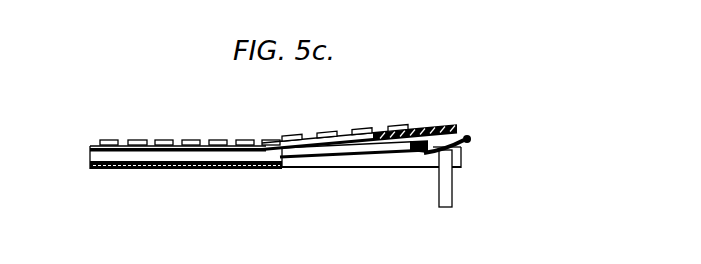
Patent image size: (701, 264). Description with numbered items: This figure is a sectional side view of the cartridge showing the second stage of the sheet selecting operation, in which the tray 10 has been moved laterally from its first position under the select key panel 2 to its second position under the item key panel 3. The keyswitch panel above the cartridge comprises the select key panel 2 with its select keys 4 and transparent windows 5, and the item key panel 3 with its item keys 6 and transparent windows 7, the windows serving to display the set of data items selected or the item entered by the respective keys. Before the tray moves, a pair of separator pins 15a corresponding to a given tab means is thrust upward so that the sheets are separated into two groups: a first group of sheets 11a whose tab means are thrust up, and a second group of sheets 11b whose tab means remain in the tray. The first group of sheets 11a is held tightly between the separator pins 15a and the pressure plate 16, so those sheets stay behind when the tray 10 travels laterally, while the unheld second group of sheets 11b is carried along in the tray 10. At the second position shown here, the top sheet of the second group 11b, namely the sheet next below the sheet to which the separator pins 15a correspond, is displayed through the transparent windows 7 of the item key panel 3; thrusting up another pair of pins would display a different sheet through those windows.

The select key panel 2 is at (377, 125).
The item key panel 3 is at (177, 137).
The select keys 4 is at (333, 131).
The transparent windows 5 is at (293, 135).
The item keys 6 is at (221, 140).
The transparent windows 7 is at (131, 141).
The tray 10 is at (188, 170).
The first group of sheets 11a is at (388, 168).
The second group of sheets 11b is at (238, 170).
The separator pins 15a is at (452, 190).
The pressure plate 16 is at (468, 134).